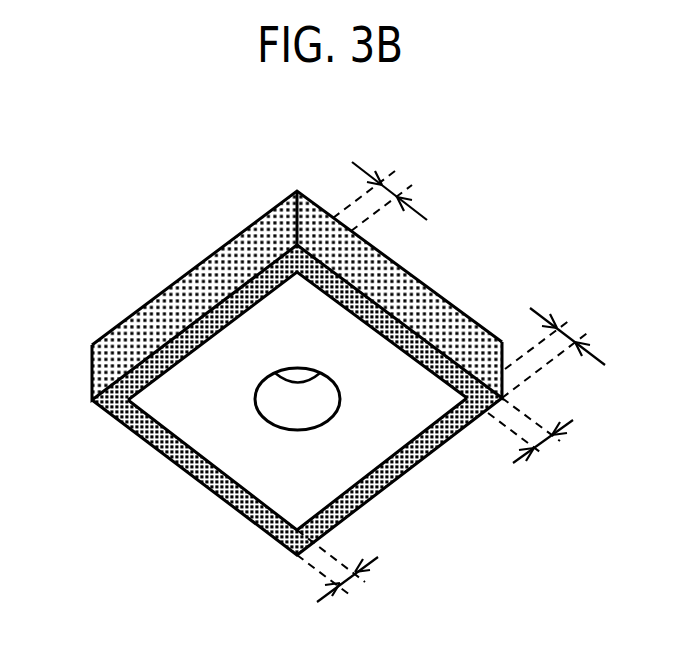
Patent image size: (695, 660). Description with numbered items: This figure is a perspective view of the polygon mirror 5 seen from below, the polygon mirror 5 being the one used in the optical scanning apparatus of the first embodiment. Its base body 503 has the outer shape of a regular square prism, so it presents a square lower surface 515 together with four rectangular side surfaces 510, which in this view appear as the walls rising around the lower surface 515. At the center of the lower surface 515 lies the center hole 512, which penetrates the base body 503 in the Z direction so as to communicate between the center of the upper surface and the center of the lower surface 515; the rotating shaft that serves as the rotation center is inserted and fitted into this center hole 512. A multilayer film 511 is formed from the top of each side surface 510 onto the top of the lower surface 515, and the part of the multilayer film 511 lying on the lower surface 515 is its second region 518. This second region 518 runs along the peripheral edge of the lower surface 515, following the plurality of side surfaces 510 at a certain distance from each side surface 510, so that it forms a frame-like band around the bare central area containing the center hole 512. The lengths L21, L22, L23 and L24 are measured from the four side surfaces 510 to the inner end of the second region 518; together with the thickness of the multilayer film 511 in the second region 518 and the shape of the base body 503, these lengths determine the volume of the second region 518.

The polygon mirror 5 is at (523, 195).
The base body 503 is at (178, 397).
The side surface 510 is at (187, 290).
The multilayer film 511 is at (253, 238).
The center hole 512 is at (320, 405).
The lower surface 515 is at (262, 485).
The second region 518 is at (207, 475).
The length L21 is at (397, 185).
The length L22 is at (567, 336).
The length L23 is at (557, 440).
The length L24 is at (350, 580).